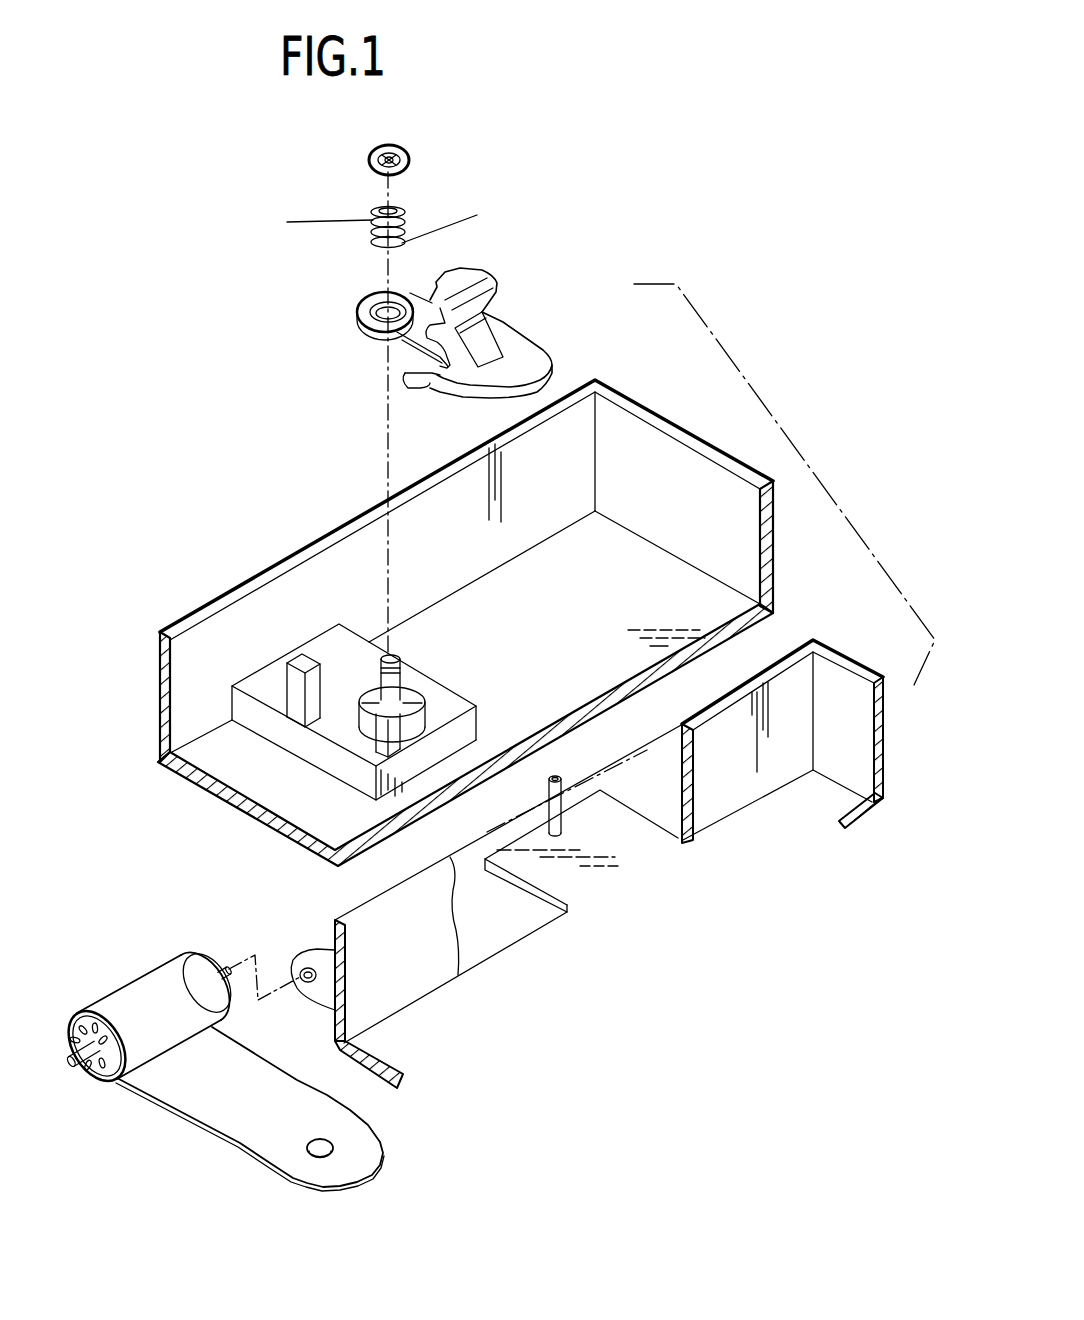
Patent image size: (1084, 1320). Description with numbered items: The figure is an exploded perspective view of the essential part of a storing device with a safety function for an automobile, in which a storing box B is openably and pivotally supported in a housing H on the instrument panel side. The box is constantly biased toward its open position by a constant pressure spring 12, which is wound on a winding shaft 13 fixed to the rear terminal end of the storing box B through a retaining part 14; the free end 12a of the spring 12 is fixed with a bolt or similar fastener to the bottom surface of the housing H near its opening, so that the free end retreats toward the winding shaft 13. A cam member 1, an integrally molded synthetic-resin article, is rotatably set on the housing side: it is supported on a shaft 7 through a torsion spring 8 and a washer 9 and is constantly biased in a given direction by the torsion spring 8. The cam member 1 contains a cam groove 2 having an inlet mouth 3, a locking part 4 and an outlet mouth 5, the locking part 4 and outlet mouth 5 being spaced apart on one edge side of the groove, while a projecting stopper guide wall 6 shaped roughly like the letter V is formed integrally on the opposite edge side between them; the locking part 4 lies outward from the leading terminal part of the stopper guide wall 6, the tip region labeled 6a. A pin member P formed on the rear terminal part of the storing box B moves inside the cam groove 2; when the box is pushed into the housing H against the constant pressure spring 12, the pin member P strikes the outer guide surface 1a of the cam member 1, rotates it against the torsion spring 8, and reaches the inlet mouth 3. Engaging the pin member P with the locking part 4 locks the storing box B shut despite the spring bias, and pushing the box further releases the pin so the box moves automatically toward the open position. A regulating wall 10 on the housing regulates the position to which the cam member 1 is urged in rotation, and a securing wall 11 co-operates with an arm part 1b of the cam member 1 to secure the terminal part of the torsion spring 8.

The cam member 1 is at (444, 337).
The outer guide surface 1a is at (463, 393).
The arm part 1b is at (463, 268).
The cam groove 2 is at (480, 292).
The inlet mouth 3 is at (408, 362).
The locking part 4 is at (432, 390).
The outlet mouth 5 is at (488, 332).
The stopper guide wall 6 is at (347, 340).
The arm of boss 6a is at (427, 351).
The shaft 7 is at (393, 657).
The torsion spring 8 is at (404, 210).
The washer 9 is at (370, 155).
The regulating wall 10 is at (375, 740).
The securing wall 11 is at (283, 679).
The constant pressure spring 12 is at (153, 985).
The free end 12a is at (360, 1152).
The winding shaft 13 is at (108, 1080).
The retaining part 14 is at (305, 953).
The housing H is at (681, 462).
The storing box B is at (837, 690).
The pin member P is at (560, 775).